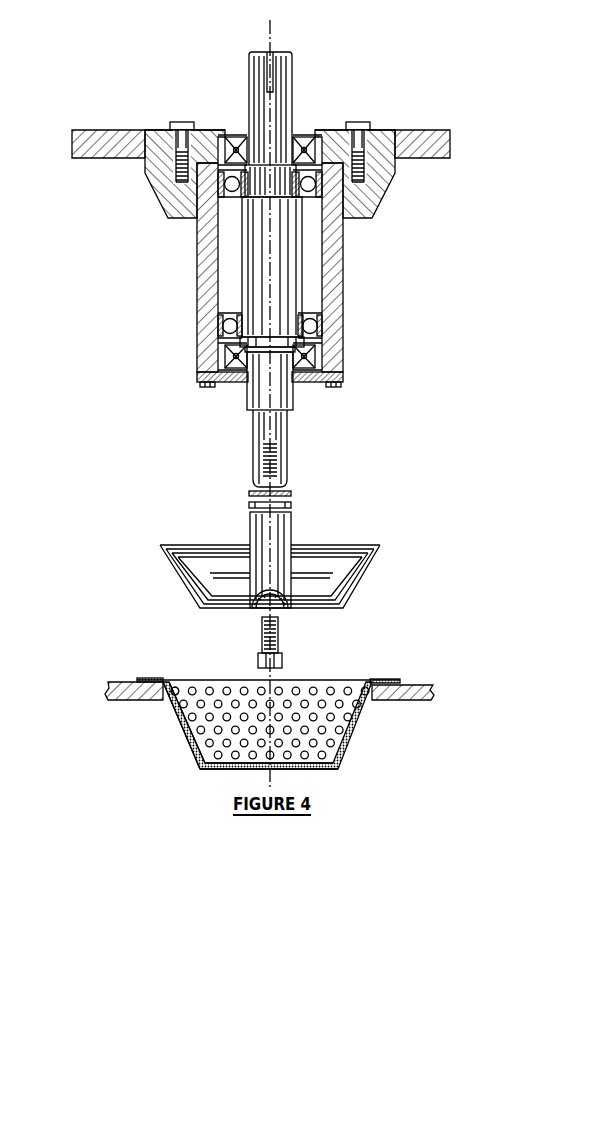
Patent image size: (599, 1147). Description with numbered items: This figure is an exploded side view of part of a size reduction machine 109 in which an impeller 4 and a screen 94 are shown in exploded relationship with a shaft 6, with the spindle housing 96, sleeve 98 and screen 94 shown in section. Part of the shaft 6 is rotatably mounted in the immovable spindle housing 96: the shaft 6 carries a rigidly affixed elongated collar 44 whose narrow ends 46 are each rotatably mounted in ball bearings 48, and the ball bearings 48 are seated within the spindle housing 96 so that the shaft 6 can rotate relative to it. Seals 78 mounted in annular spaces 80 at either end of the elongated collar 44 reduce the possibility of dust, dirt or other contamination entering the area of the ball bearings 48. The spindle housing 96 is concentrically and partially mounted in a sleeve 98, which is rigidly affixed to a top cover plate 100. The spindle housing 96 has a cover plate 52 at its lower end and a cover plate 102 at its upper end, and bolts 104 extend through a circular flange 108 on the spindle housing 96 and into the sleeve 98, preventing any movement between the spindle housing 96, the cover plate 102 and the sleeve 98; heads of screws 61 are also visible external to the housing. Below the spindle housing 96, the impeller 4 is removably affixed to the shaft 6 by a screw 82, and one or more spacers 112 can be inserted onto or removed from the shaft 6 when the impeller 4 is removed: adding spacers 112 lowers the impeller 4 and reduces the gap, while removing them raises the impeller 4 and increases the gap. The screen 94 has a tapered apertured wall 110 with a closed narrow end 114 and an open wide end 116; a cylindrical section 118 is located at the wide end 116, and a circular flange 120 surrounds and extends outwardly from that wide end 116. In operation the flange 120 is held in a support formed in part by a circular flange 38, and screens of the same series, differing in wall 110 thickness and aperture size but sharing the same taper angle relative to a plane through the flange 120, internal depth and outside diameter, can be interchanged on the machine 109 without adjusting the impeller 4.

The impeller 4 is at (380, 557).
The shaft 6 is at (290, 437).
The circular flange 38 is at (125, 683).
The elongated collar 44 is at (265, 250).
The narrow ends 46 is at (262, 182).
The ball bearings 48 is at (365, 200).
The cover plate 52 is at (238, 377).
The screws 61 is at (208, 385).
The seals 78 is at (310, 127).
The annular spaces 80 is at (327, 132).
The screw 82 is at (278, 635).
The screen 94 is at (352, 717).
The spindle housing 96 is at (337, 252).
The sleeve 98 is at (395, 173).
The top cover plate 100 is at (422, 130).
The cover plate 102 is at (213, 130).
The bolts 104 is at (182, 118).
The circular flange 108 is at (168, 170).
The size reduction machine 109 is at (116, 347).
The tapered wall 110 is at (187, 718).
The spacers 112 is at (293, 506).
The closed narrow end 114 is at (337, 773).
The open wide end 116 is at (340, 678).
The cylindrical section 118 is at (173, 690).
The circular flange 120 is at (377, 680).